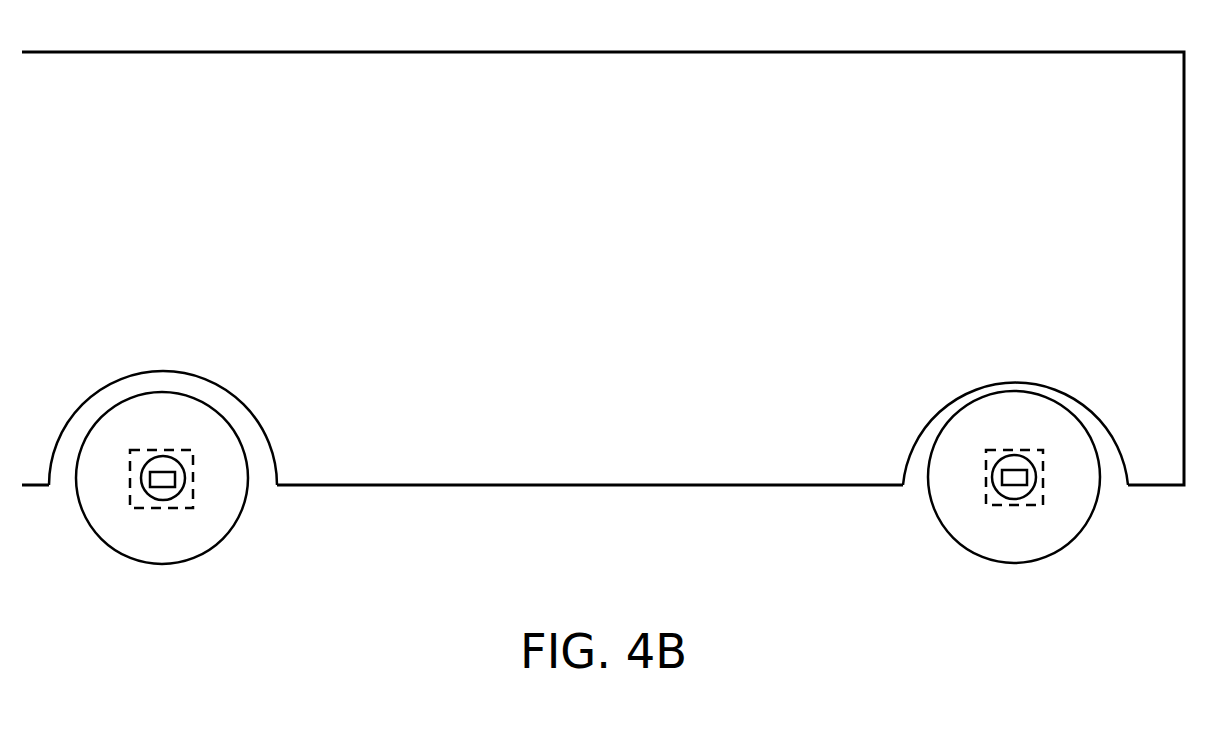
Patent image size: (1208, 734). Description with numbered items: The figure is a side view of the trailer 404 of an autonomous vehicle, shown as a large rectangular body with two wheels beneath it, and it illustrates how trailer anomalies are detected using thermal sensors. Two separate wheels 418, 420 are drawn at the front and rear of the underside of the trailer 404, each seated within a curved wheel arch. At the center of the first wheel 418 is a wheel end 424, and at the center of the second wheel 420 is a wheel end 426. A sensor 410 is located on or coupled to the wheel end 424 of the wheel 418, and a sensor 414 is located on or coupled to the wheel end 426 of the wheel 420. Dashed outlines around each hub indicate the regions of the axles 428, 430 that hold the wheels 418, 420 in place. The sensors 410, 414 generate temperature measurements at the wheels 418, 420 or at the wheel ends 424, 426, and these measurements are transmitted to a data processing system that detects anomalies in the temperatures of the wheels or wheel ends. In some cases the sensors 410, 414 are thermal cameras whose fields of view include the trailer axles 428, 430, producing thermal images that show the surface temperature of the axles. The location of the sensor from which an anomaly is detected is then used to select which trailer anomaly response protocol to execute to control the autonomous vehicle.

The trailer 404 is at (124, 52).
The wheel 418 is at (102, 415).
The wheel 420 is at (960, 408).
The sensor 410 is at (157, 470).
The sensor 414 is at (1011, 468).
The wheel end 424 is at (140, 472).
The wheel end 426 is at (992, 471).
The axle 428 is at (193, 449).
The axle 430 is at (1049, 449).